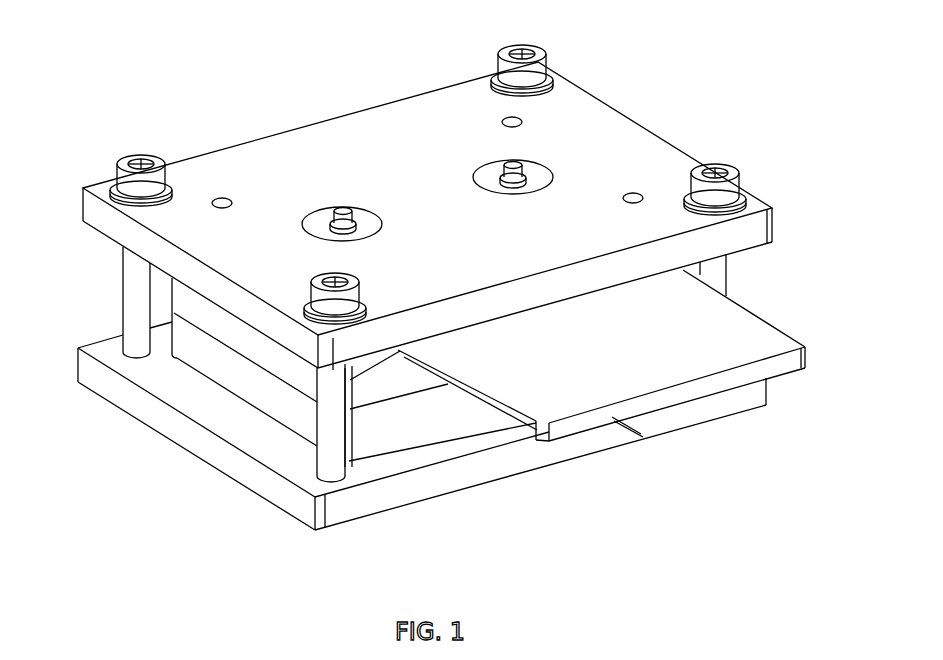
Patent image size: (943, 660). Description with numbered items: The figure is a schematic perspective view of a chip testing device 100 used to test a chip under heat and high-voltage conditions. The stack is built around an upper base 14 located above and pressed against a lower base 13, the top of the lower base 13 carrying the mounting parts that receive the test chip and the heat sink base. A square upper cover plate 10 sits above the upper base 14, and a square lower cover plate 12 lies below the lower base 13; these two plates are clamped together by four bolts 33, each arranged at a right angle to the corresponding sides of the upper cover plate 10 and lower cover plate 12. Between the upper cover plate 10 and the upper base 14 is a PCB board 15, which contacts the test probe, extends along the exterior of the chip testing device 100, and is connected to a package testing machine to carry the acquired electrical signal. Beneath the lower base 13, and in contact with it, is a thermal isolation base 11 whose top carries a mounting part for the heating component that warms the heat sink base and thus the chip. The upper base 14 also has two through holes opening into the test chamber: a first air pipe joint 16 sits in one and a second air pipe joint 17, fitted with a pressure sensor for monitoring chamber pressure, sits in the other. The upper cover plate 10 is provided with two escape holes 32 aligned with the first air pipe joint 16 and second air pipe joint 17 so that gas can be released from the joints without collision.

The chip testing device 100 is at (76, 21).
The upper cover plate 10 is at (607, 140).
The thermal isolation base 11 is at (210, 365).
The lower cover plate 12 is at (222, 423).
The lower base 13 is at (360, 398).
The upper base 14 is at (392, 362).
The PCB board 15 is at (563, 392).
The first air pipe joint 16 is at (335, 213).
The second air pipe joint 17 is at (508, 167).
The escape holes 32 is at (318, 225).
The bolts 33 is at (723, 195).